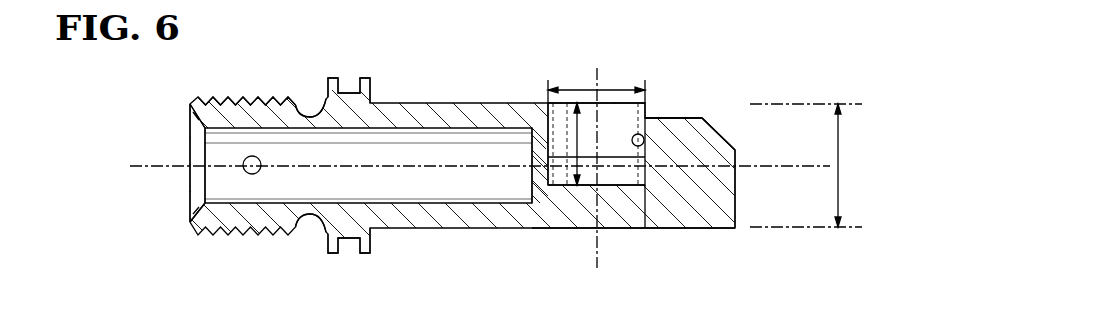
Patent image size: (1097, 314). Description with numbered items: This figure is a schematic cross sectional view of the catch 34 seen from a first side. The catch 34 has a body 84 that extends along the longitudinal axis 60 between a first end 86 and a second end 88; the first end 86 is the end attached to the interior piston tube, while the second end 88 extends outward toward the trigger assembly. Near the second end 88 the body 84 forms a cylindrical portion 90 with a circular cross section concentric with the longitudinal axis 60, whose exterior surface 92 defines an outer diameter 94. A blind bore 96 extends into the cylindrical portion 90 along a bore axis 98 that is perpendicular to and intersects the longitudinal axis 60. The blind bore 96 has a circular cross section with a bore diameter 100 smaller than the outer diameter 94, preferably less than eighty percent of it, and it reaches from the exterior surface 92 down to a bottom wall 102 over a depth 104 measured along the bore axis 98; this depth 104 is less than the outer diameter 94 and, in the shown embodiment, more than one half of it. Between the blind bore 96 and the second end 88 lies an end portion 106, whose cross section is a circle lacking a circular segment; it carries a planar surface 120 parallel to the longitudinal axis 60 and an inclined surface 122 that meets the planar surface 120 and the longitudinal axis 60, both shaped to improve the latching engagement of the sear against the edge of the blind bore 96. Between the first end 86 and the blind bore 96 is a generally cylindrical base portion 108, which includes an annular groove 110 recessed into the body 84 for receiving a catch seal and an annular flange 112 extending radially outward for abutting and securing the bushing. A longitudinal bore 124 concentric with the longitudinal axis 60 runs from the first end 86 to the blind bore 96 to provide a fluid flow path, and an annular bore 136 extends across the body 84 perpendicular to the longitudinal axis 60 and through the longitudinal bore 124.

The catch 34 is at (678, 36).
The longitudinal axis 60 is at (173, 160).
The body 84 is at (395, 113).
The first end 86 is at (190, 222).
The second end 88 is at (735, 216).
The cylindrical portion 90 is at (552, 185).
The exterior surface 92 is at (670, 230).
The outer diameter 94 is at (838, 185).
The blind bore 96 is at (644, 138).
The bore axis 98 is at (597, 82).
The bore diameter 100 is at (577, 88).
The bottom wall 102 is at (551, 186).
The depth 104 is at (575, 143).
The end portion 106 is at (695, 203).
The base portion 108 is at (258, 117).
The annular groove 110 is at (352, 90).
The annular flange 112 is at (368, 245).
The planar surface 120 is at (680, 124).
The inclined surface 122 is at (718, 123).
The longitudinal bore 124 is at (283, 203).
The annular bore 136 is at (254, 174).